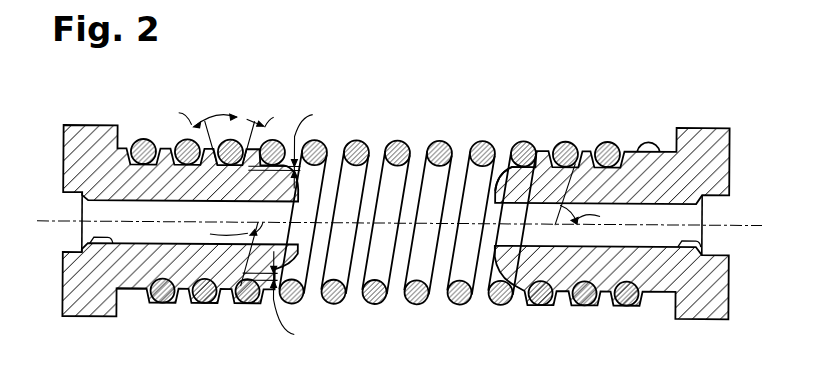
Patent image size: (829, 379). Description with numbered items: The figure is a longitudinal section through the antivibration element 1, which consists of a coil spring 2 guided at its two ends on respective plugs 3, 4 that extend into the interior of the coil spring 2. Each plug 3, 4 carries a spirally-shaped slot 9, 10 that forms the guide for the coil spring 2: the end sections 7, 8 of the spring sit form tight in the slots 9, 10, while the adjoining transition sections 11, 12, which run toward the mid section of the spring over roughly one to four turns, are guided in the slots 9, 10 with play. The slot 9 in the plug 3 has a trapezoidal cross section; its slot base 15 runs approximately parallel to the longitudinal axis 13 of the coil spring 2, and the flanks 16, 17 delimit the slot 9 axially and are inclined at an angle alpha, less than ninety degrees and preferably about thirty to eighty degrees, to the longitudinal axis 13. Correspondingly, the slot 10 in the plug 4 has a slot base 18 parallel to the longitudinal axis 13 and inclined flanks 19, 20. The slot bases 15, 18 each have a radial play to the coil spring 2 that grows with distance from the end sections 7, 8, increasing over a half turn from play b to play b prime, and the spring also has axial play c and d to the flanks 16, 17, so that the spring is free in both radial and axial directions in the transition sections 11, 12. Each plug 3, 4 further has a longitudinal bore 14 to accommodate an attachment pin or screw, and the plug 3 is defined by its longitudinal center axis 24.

The antivibration element 1 is at (668, 67).
The coil spring 2 is at (440, 146).
The plug 3 is at (87, 133).
The plug 4 is at (707, 129).
The end section 7 is at (130, 101).
The end section 8 is at (662, 102).
The slot 9 is at (131, 291).
The slot 10 is at (550, 162).
The transition section 11 is at (260, 101).
The transition section 12 is at (535, 102).
The longitudinal axis 13 is at (733, 221).
The longitudinal bore 14 is at (98, 237).
The slot base 15 is at (212, 301).
The flank 16 is at (182, 293).
The flank 17 is at (231, 293).
The slot base 18 is at (588, 303).
The flank 19 is at (607, 295).
The flank 20 is at (565, 293).
The longitudinal center axis 24 is at (53, 220).